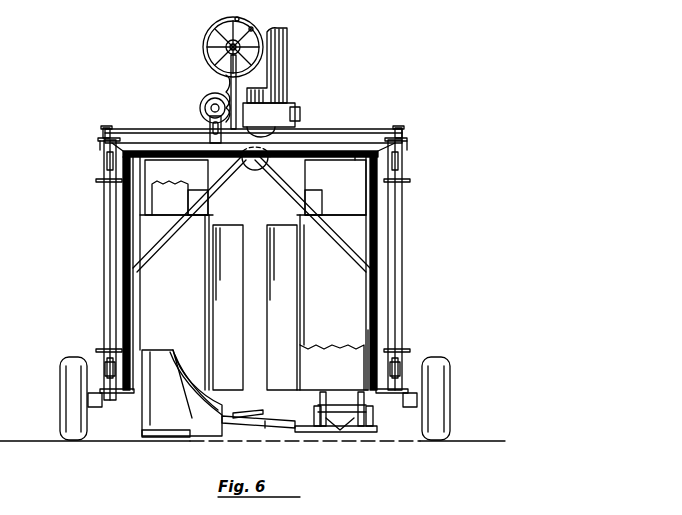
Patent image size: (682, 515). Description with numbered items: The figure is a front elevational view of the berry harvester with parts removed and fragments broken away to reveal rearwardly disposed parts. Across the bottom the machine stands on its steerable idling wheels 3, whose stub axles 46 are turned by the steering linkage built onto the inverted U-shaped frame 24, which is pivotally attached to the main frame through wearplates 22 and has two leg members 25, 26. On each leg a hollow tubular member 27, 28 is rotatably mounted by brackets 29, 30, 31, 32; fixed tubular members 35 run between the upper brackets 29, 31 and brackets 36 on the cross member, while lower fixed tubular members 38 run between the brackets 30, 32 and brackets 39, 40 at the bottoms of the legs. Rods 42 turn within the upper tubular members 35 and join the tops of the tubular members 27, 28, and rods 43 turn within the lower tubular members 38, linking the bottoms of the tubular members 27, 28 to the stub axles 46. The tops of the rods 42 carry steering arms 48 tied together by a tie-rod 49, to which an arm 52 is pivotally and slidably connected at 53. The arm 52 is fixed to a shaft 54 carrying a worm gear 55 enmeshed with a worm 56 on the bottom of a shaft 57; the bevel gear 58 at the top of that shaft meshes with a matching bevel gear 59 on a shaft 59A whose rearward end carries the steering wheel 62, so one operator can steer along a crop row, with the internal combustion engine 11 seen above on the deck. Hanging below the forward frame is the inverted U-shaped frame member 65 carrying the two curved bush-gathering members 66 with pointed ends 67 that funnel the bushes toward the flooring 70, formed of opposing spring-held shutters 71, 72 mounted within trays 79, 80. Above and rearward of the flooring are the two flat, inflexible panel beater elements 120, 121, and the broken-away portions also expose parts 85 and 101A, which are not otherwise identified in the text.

The steerable idling wheels 3 is at (60, 390).
The internal combustion engine 11 is at (289, 80).
The wearplates 22 is at (252, 168).
The inverted U-shaped frame 24 is at (330, 160).
The leg member 25 is at (123, 242).
The leg member 26 is at (395, 236).
The hollow tubular member 27 is at (104, 208).
The hollow tubular member 28 is at (403, 216).
The bracket 29 is at (96, 180).
The bracket 30 is at (105, 349).
The bracket 31 is at (410, 180).
The bracket 32 is at (405, 349).
The tubular members 35 is at (103, 147).
The brackets 36 is at (100, 138).
The tubular members 38 is at (107, 362).
The bracket 39 is at (128, 394).
The bracket 40 is at (388, 394).
The rods 42 is at (106, 160).
The rods 43 is at (105, 372).
The stub axles 46 is at (100, 408).
The steering arms 48 is at (106, 126).
The tie-rod 49 is at (162, 130).
The arm 52 is at (210, 126).
The pivotal and slidable connection 53 is at (217, 158).
The shaft 54 is at (205, 108).
The worm gear 55 is at (203, 98).
The worm 56 is at (225, 90).
The shaft 57 is at (229, 58).
The bevel gear 58 is at (226, 46).
The bevel gear 59 is at (219, 29).
The shaft 59A is at (246, 15).
The steering wheel 62 is at (254, 28).
The inverted U-shaped frame member 65 is at (146, 176).
The bush-gathering members 66 is at (177, 290).
The pointed ends 67 is at (180, 437).
The flooring 70 is at (264, 411).
The shutters 71 is at (236, 424).
The shutters 72 is at (275, 425).
The tray 79 is at (160, 437).
The tray 80 is at (374, 434).
The inner panel 85 is at (176, 201).
The base frame 101A is at (340, 434).
The beater element 120 is at (317, 302).
The beater element 121 is at (225, 302).